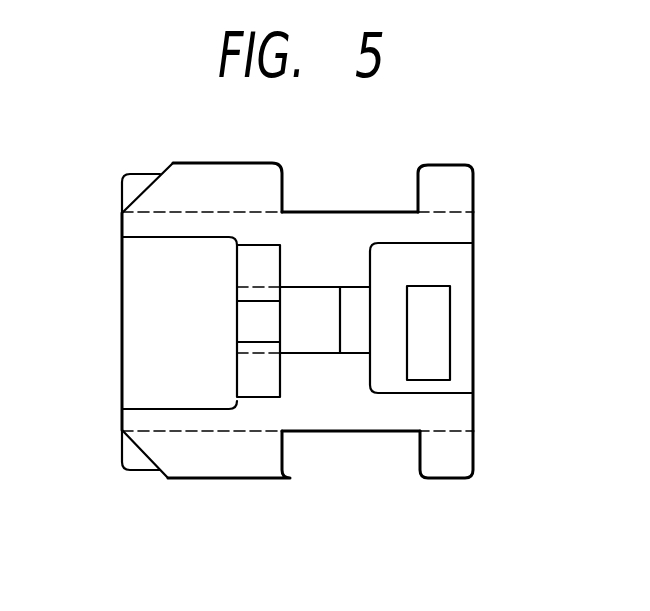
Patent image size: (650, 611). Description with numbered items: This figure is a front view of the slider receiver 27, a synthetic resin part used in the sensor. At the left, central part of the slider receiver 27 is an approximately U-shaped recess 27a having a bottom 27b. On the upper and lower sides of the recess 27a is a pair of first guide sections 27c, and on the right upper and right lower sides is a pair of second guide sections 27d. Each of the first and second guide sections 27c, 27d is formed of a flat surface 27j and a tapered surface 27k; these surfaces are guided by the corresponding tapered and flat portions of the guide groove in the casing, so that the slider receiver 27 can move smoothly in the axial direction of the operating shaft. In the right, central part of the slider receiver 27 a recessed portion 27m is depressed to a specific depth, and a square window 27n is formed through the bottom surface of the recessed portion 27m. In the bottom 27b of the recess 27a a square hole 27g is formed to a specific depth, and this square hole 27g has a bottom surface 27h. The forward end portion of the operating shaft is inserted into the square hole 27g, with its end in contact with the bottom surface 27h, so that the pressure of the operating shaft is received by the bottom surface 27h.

The slider receiver 27 is at (207, 140).
The recess 27a is at (225, 318).
The bottom 27b is at (237, 275).
The first guide section 27c is at (173, 163).
The second guide section 27d is at (442, 163).
The square hole 27g is at (315, 335).
The bottom surface 27h is at (338, 323).
The flat surface 27j is at (260, 167).
The tapered surface 27k is at (148, 200).
The recessed portion 27m is at (465, 253).
The square window 27n is at (438, 325).